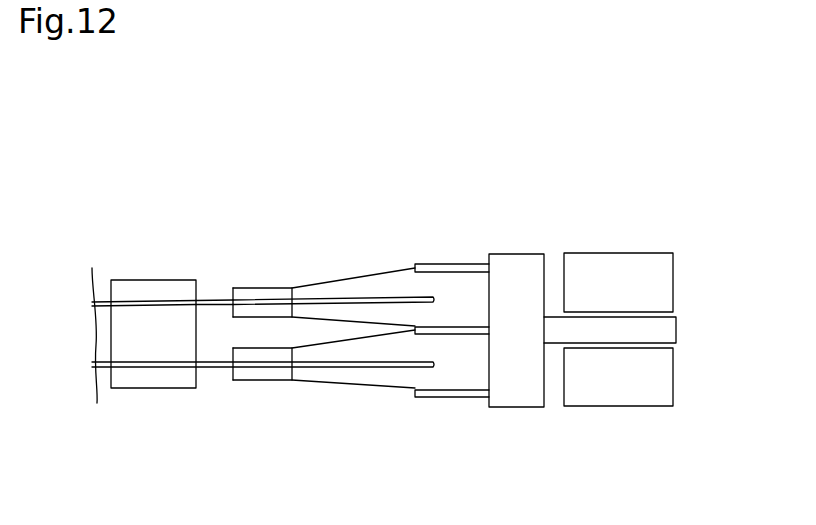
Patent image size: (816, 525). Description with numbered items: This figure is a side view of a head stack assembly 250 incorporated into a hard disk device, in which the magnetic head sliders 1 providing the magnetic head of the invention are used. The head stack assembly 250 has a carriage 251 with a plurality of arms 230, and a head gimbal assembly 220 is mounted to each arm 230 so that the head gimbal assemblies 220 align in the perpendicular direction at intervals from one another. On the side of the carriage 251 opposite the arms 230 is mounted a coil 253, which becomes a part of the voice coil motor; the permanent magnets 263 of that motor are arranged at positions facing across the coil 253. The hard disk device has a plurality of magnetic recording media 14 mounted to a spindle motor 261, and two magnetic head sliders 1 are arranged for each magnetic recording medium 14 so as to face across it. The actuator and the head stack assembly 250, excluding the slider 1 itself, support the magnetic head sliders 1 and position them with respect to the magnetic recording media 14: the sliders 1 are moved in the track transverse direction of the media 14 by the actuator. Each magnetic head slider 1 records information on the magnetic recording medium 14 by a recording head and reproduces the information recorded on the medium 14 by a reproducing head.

The magnetic head slider 1 is at (222, 296).
The magnetic recording medium 14 is at (207, 298).
The head gimbal assembly 220 is at (345, 279).
The arm 230 is at (430, 264).
The head stack assembly 250 is at (628, 329).
The carriage 251 is at (519, 403).
The coil 253 is at (668, 330).
The spindle motor 261 is at (132, 280).
The permanent magnet 263 is at (612, 253).